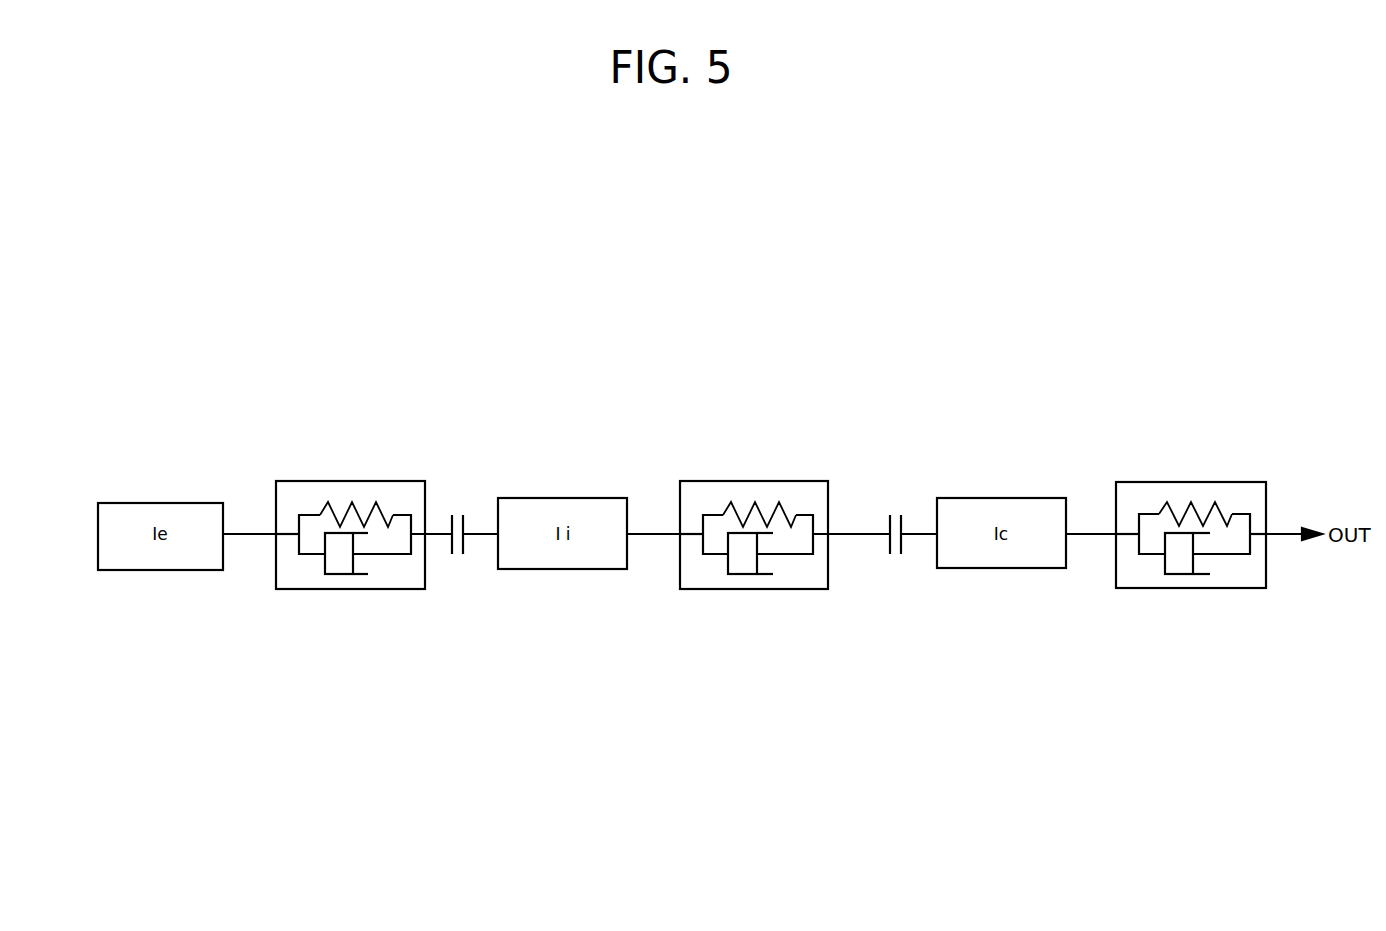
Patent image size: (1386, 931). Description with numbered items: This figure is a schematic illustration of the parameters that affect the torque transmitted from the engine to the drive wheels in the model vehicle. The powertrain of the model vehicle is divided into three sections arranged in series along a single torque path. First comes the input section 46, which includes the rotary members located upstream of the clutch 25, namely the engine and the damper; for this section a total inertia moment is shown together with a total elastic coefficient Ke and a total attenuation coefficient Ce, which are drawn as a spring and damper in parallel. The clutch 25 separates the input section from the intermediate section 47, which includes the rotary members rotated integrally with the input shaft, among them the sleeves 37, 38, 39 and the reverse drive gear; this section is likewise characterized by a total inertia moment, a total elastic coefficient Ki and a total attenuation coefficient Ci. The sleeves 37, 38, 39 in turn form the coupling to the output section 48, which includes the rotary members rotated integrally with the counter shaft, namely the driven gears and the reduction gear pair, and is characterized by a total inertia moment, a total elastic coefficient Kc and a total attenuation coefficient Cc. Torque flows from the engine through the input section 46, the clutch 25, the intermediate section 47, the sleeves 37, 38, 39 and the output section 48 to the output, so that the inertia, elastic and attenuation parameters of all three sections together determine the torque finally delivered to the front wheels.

The input section 46 is at (338, 517).
The intermediate section 47 is at (761, 514).
The output section 48 is at (1167, 507).
The clutch 25 is at (456, 507).
The sleeve 37 is at (903, 498).
The sleeve 38 is at (903, 498).
The sleeve 39 is at (894, 503).
The total elastic coefficient of the input section Ke is at (352, 500).
The total attenuation coefficient of the input section Ce is at (340, 577).
The total elastic coefficient of the intermediate section Ki is at (746, 500).
The total attenuation coefficient of the intermediate section Ci is at (745, 578).
The total elastic coefficient of the output section Kc is at (1186, 500).
The total attenuation coefficient of the output section Cc is at (1178, 577).